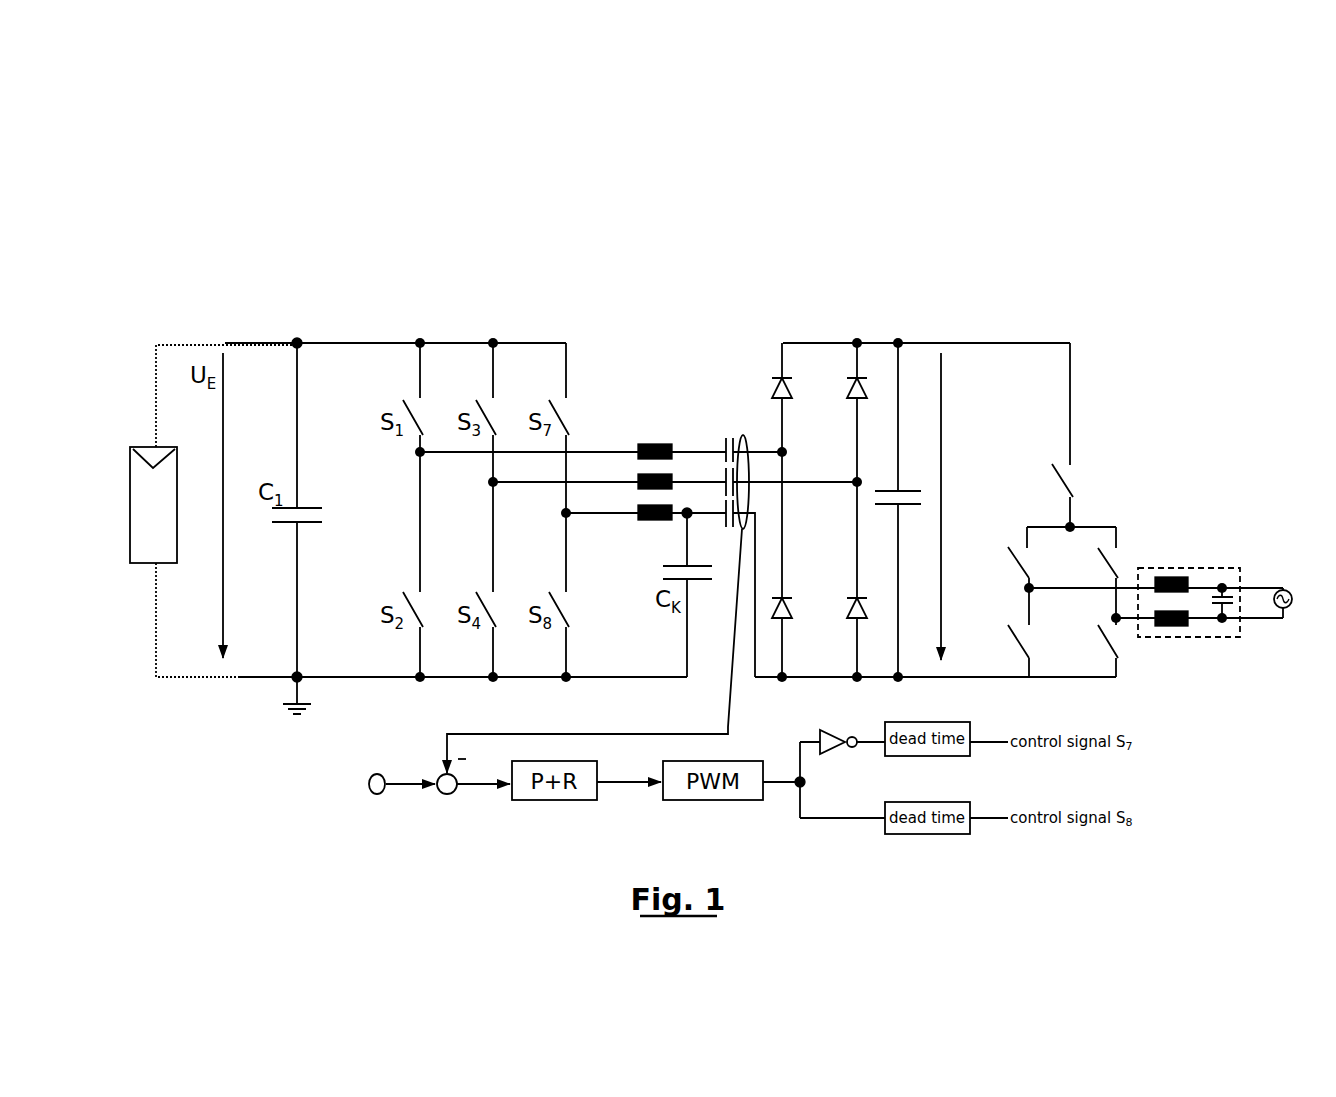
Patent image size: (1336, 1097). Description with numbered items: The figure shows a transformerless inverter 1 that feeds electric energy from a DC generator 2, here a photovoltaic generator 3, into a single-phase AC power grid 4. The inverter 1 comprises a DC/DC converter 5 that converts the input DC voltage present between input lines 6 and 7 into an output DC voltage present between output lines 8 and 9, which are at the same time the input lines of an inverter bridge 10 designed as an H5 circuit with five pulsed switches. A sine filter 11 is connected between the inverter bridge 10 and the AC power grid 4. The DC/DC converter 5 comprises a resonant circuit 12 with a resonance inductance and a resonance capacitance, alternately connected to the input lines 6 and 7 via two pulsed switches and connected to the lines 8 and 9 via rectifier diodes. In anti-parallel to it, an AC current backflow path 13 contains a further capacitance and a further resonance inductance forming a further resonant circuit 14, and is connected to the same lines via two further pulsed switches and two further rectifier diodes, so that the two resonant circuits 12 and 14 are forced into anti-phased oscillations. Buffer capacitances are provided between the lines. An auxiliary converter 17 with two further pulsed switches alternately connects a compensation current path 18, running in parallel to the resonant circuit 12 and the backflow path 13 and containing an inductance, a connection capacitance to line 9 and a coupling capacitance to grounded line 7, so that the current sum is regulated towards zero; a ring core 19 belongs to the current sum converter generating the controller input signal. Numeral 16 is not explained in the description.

The inverter 1 is at (866, 300).
The DC generator 2 is at (120, 477).
The photovoltaic generator 3 is at (130, 525).
The AC power grid 4 is at (1291, 590).
The DC/DC converter 5 is at (632, 313).
The input line 6 is at (260, 345).
The input line 7 is at (253, 680).
The output line 8 is at (938, 343).
The output line 9 is at (958, 670).
The inverter bridge 10 is at (1107, 473).
The sine filter 11 is at (1192, 552).
The resonant circuit 12 is at (647, 430).
The AC current backflow path 13 is at (580, 472).
The further resonant circuit 14 is at (680, 490).
The resonant capacitors 16 is at (684, 420).
The auxiliary converter 17 is at (567, 330).
The compensation current path 18 is at (593, 522).
The ring core 19 is at (743, 435).